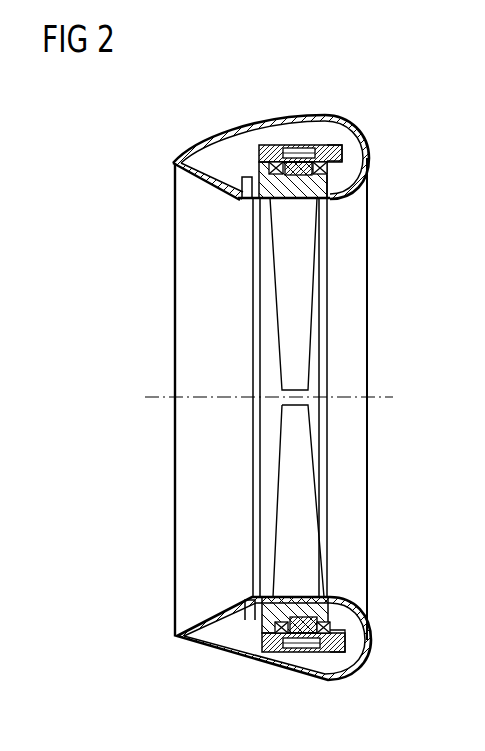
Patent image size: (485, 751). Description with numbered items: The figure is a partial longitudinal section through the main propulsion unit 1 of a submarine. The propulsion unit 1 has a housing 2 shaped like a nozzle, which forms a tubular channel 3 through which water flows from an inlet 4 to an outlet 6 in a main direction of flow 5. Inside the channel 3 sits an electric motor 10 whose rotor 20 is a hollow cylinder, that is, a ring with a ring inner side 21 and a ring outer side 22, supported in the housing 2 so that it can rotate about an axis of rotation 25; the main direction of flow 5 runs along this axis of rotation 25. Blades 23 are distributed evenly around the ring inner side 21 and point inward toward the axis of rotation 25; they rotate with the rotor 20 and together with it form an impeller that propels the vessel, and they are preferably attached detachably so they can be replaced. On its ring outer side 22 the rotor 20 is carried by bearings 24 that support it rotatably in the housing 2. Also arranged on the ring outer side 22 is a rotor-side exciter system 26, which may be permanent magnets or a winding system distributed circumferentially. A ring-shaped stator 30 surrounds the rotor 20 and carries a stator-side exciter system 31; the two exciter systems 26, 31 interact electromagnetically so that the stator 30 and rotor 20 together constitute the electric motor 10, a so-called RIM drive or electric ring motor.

The main propulsion unit 1 is at (144, 126).
The housing 2 is at (213, 137).
The channel 3 is at (186, 294).
The inlet 4 is at (343, 276).
The main direction of flow 5 is at (352, 353).
The outlet 6 is at (186, 498).
The electric motor 10 is at (320, 532).
The rotor 20 is at (328, 182).
The ring inner side 21 is at (302, 210).
The ring outer side 22 is at (246, 140).
The blades 23 is at (297, 370).
The bearings 24 is at (330, 168).
The axis of rotation 25 is at (150, 397).
The exciter system 26 is at (313, 144).
The stator 30 is at (261, 146).
The stator-side exciter system 31 is at (291, 145).